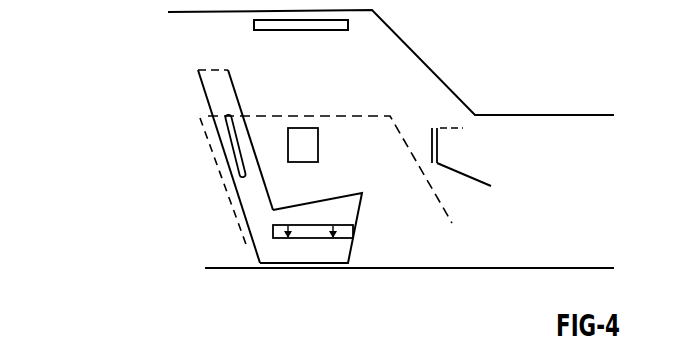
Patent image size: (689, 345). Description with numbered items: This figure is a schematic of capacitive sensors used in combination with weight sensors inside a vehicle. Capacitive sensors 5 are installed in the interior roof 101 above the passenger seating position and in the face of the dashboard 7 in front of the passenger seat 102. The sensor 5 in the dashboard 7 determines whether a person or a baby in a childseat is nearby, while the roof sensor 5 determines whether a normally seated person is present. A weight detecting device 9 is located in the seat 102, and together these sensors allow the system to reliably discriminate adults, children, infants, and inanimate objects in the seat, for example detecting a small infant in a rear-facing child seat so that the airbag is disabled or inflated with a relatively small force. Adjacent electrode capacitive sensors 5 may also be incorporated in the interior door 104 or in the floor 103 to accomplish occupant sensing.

The roof 101 is at (168, 12).
The passenger seat 102 is at (235, 195).
The floor 103 is at (499, 268).
The interior door 104 is at (437, 198).
The capacitive sensor 5 is at (300, 131).
The dashboard 7 is at (453, 128).
The weight detecting device 9 is at (273, 229).